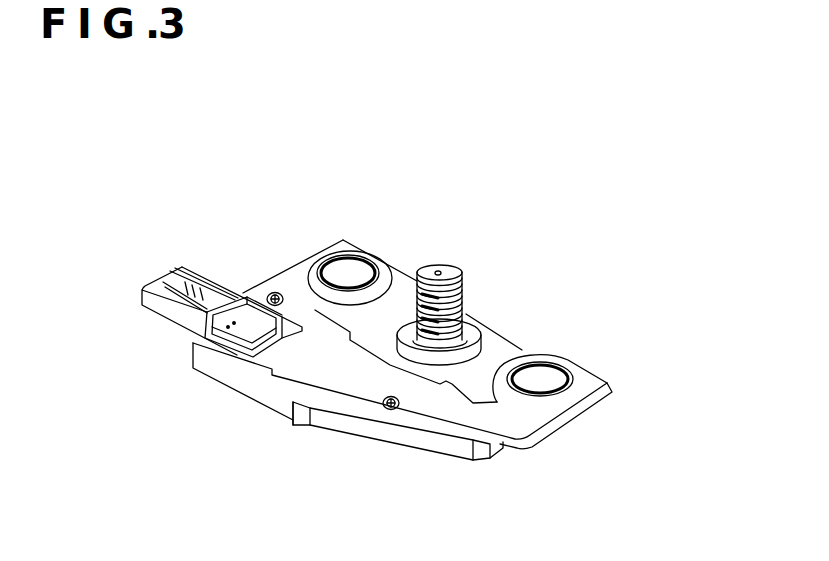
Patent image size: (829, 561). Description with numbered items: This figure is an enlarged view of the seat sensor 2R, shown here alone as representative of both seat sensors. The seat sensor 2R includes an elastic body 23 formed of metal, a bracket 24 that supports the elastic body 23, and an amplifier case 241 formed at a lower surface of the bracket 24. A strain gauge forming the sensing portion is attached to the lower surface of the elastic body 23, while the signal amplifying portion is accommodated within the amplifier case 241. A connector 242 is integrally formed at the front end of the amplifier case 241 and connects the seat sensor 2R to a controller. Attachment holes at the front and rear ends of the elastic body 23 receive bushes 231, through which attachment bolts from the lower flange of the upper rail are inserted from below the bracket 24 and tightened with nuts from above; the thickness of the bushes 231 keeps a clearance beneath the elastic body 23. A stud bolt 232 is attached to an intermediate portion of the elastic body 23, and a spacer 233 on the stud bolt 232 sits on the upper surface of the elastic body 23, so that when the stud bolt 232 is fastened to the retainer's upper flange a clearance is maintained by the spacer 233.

The seat sensor 2R is at (565, 195).
The elastic body 23 is at (505, 347).
The bushes 231 is at (349, 268).
The stud bolt 232 is at (422, 268).
The spacer 233 is at (470, 342).
The bracket 24 is at (547, 412).
The amplifier case 241 is at (409, 440).
The connector 242 is at (178, 270).